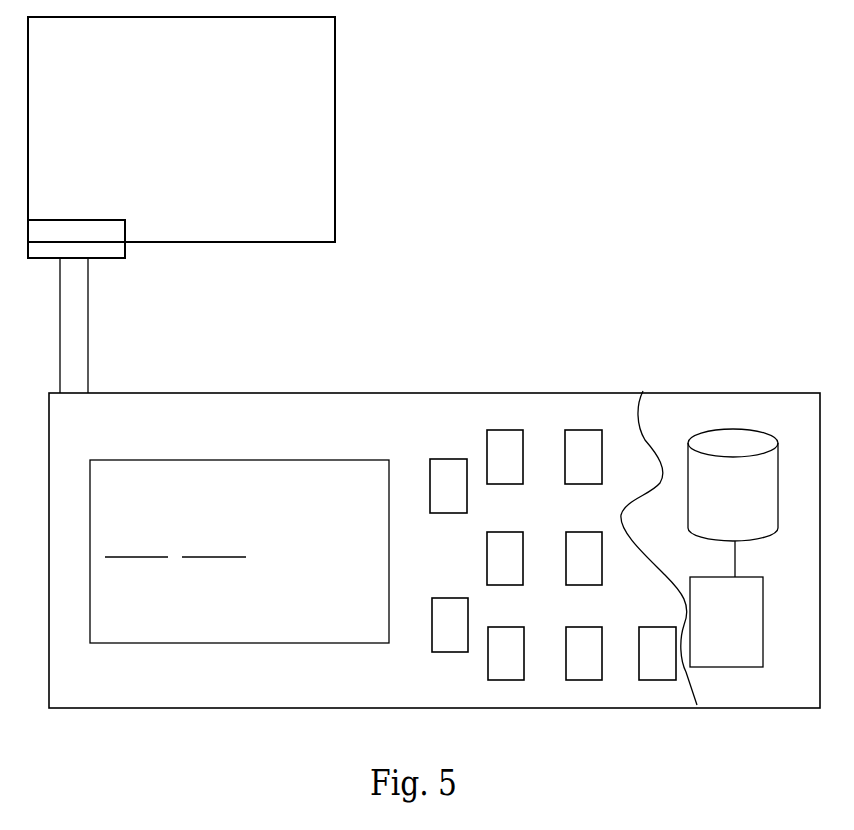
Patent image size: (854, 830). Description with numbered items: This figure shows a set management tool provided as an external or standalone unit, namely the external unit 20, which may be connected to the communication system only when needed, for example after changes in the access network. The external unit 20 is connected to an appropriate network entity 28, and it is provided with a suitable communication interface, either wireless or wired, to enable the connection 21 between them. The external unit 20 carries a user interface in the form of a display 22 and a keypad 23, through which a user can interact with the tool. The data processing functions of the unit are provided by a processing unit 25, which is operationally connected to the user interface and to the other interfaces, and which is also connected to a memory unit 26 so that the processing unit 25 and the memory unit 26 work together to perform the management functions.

The external unit 20 is at (241, 412).
The connection 21 is at (88, 314).
The display 22 is at (310, 459).
The keypad 23 is at (446, 480).
The processing unit 25 is at (700, 597).
The memory unit 26 is at (751, 482).
The network entity 28 is at (274, 223).